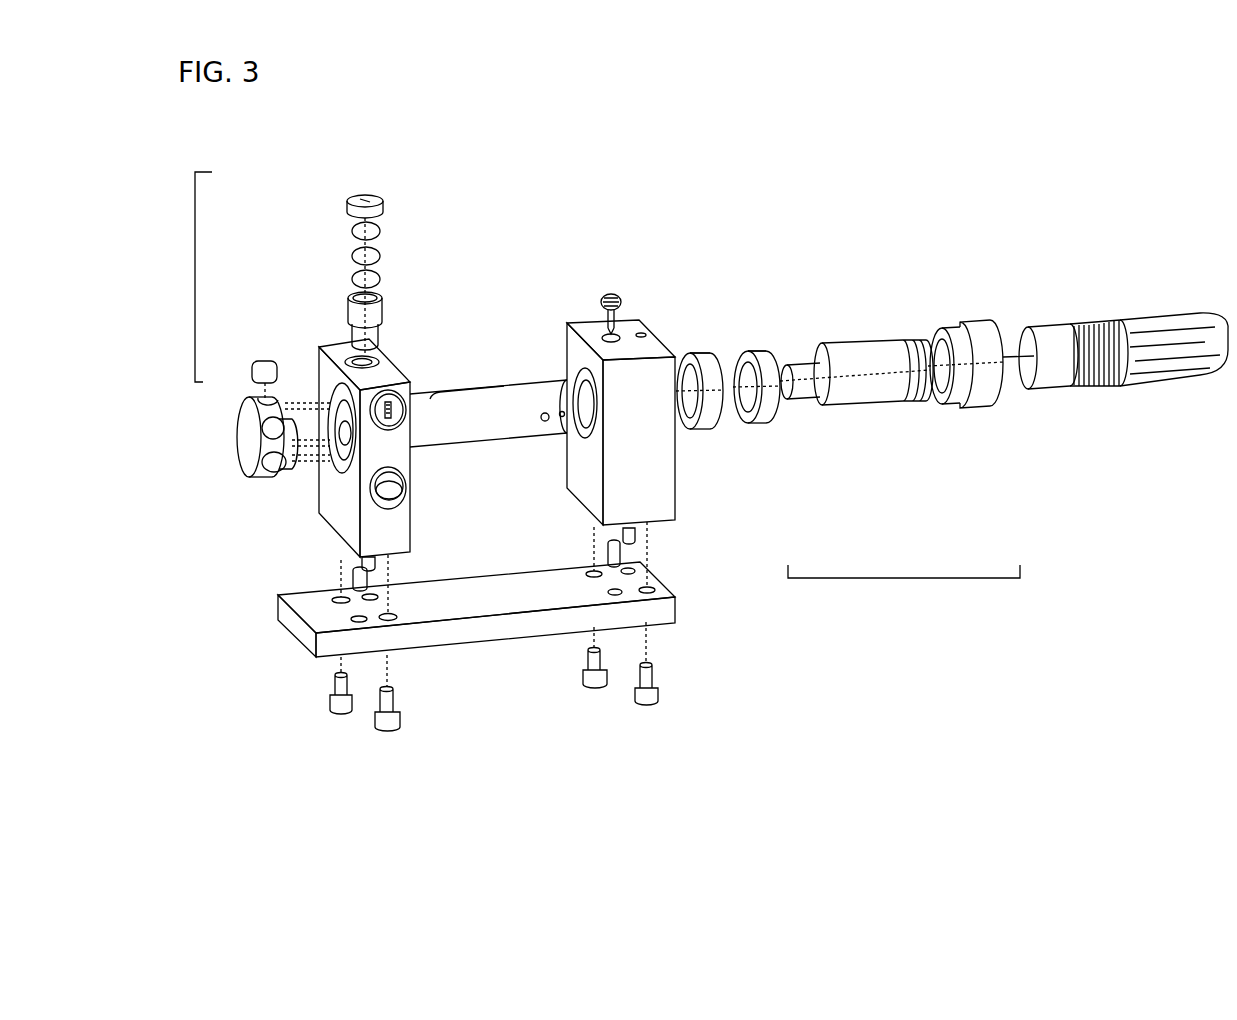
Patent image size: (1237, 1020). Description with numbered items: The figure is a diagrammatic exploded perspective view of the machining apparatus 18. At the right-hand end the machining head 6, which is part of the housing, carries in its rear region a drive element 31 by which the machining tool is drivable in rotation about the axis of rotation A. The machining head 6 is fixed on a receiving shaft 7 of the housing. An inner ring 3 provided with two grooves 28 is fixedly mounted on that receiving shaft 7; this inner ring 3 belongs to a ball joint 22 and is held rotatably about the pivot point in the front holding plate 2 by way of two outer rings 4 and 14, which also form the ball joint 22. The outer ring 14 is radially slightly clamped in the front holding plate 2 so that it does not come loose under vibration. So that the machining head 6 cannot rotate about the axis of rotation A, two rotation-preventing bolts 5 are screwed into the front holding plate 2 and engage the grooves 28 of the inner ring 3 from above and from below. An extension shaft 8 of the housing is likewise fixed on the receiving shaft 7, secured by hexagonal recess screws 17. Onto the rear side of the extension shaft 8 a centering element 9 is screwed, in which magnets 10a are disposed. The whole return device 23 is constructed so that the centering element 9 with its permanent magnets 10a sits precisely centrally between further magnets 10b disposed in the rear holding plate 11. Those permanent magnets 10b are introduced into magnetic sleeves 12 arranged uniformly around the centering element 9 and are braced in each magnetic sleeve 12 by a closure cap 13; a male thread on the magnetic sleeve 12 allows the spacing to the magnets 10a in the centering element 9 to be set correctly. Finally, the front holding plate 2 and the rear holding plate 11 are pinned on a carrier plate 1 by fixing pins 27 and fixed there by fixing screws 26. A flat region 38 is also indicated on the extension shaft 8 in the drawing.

The carrier plate 1 is at (483, 636).
The front holding plate 2 is at (645, 488).
The inner ring 3 is at (765, 405).
The outer ring 4 is at (713, 402).
The rotation-preventing bolts 5 is at (622, 299).
The machining head 6 is at (1160, 343).
The receiving shaft 7 is at (860, 380).
The extension shaft 8 is at (432, 413).
The centering element 9 is at (250, 432).
The magnets 10a is at (252, 362).
The magnets 10b is at (352, 277).
The rear holding plate 11 is at (332, 490).
The magnetic sleeve 12 is at (350, 313).
The closure cap 13 is at (347, 208).
The outer ring 14 is at (986, 395).
The hexagonal recess screws 17 is at (542, 414).
The machining apparatus 18 is at (916, 174).
The ball joint 22 is at (898, 590).
The return device 23 is at (186, 279).
The fixing screws 26 is at (384, 722).
The fixing pins 27 is at (362, 566).
The grooves 28 is at (747, 353).
The drive element 31 is at (1090, 365).
The flat 38 is at (450, 388).
The axis of rotation A is at (1005, 355).